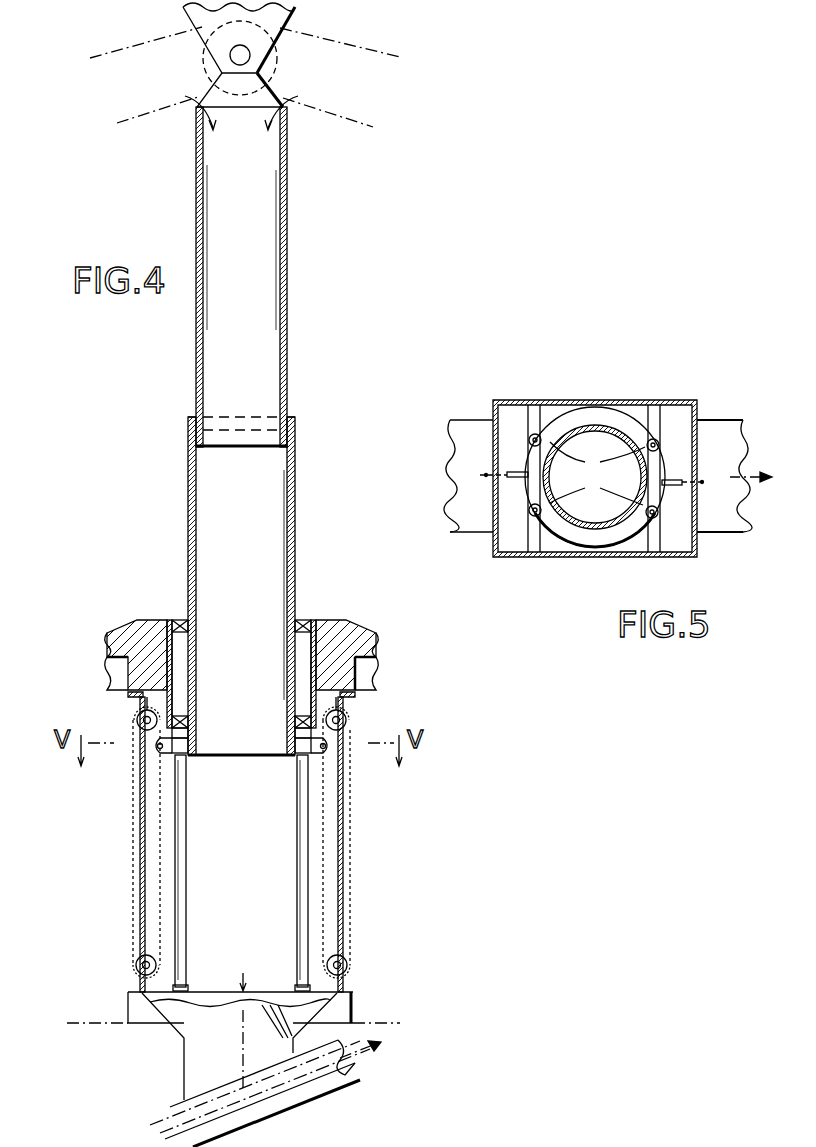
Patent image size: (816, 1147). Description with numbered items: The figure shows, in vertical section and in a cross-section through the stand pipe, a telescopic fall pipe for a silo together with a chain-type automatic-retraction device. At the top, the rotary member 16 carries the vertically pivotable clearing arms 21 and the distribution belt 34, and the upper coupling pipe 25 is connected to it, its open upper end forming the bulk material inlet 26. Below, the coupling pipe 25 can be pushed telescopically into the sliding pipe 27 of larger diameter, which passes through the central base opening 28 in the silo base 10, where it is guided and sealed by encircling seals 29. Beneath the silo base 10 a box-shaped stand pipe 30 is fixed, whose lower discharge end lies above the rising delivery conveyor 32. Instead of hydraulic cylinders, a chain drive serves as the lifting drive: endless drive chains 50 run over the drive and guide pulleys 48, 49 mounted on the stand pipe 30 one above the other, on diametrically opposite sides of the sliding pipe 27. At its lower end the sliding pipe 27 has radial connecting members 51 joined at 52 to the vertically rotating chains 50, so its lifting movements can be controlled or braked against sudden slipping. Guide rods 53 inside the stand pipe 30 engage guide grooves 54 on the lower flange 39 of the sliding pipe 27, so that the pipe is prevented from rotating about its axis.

In FIG. 4, the silo base 10 is at (350, 635).
In FIG. 4, the rotary member 16 is at (284, 17).
In FIG. 4, the clearing arms 21 is at (121, 60).
In FIG. 4, the coupling pipe 25 is at (270, 188).
In FIG. 4, the bulk material inlet 26 is at (244, 110).
In FIG. 4, the sliding pipe 27 is at (284, 550).
In FIG. 5, the sliding pipe 27 is at (576, 428).
In FIG. 4, the base opening 28 is at (355, 668).
In FIG. 4, the encircling seals 29 is at (305, 622).
In FIG. 4, the stand pipe 30 is at (140, 886).
In FIG. 5, the stand pipe 30 is at (572, 557).
In FIG. 4, the delivery conveyor 32 is at (298, 1085).
In FIG. 5, the delivery conveyor 32 is at (733, 513).
In FIG. 4, the distribution belt 34 is at (168, 408).
In FIG. 5, the flange 39 is at (604, 410).
In FIG. 4, the drive pulley 48 is at (140, 718).
In FIG. 4, the guide pulley 49 is at (136, 966).
In FIG. 4, the drive chains 50 is at (133, 830).
In FIG. 5, the drive chains 50 is at (480, 478).
In FIG. 4, the radial connecting members 51 is at (172, 757).
In FIG. 5, the radial connecting members 51 is at (514, 470).
In FIG. 4, the connection point 52 is at (157, 748).
In FIG. 4, the guide rods 53 is at (187, 852).
In FIG. 5, the guide rods 53 is at (533, 436).
In FIG. 5, the guide grooves 54 is at (597, 473).